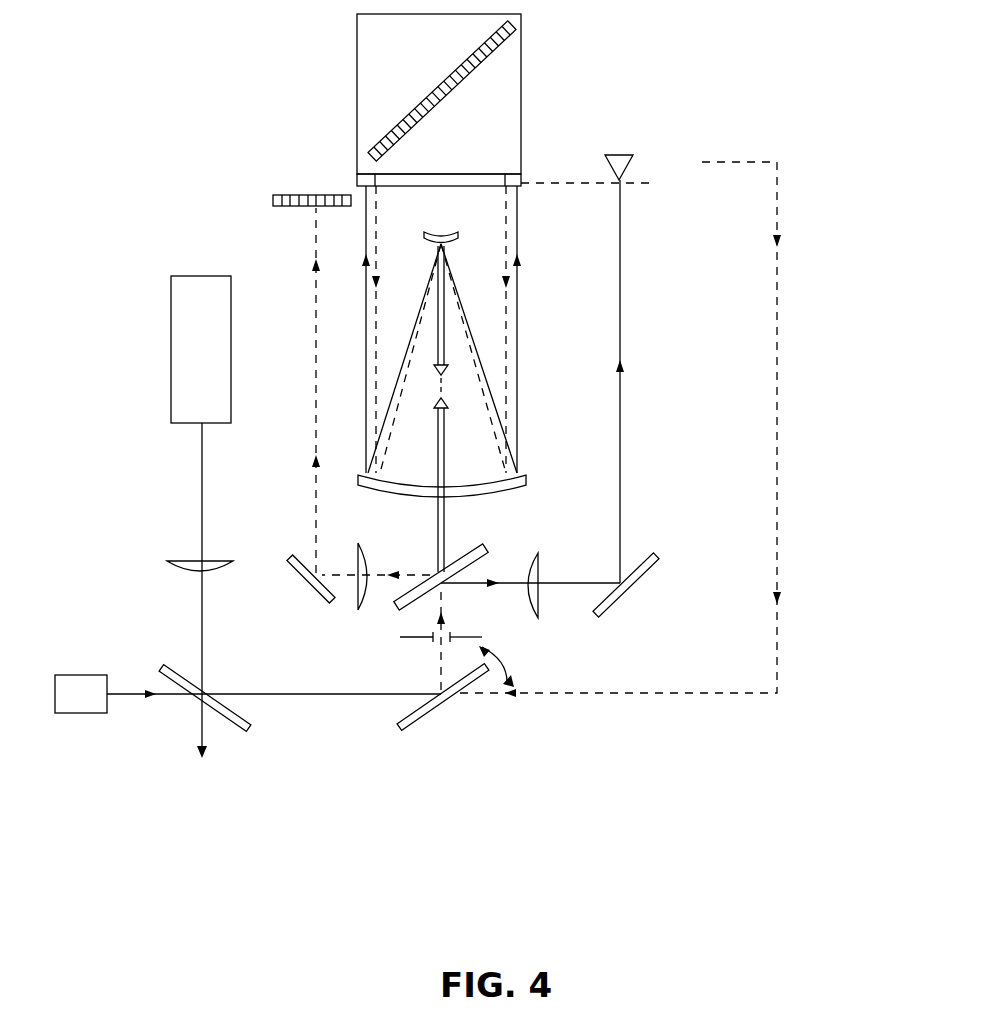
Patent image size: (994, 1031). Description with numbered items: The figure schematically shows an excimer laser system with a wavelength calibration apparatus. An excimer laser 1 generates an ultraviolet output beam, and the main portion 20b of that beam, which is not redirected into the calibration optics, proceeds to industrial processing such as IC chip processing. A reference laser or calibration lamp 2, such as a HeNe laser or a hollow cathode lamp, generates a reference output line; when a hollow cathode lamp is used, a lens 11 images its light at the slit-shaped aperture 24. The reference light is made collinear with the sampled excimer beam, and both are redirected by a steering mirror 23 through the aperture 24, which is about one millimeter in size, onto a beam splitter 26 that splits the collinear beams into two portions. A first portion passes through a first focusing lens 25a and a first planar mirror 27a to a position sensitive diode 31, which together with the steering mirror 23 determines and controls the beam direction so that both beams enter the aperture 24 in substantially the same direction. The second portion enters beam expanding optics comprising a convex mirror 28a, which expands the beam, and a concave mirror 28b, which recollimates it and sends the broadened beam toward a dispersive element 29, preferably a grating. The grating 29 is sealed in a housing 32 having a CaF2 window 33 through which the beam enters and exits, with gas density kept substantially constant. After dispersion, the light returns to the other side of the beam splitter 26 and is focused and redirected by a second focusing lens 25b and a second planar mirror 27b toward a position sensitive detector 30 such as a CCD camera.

The excimer laser 1 is at (75, 705).
The reference laser or calibration lamp 2 is at (195, 356).
The lens 11 is at (180, 560).
The main portion of the output beam 20b is at (203, 655).
The steering mirror 23 is at (438, 718).
The aperture 24 is at (410, 640).
The first focusing lens 25a is at (537, 623).
The second focusing lens 25b is at (357, 618).
The beam splitter 26 is at (465, 548).
The first planar mirror 27a is at (652, 578).
The second planar mirror 27b is at (297, 558).
The convex mirror 28a is at (443, 231).
The concave mirror 28b is at (530, 478).
The dispersive element 29 is at (450, 92).
The detector 30 is at (293, 193).
The position sensitive diode 31 is at (640, 178).
The housing 32 is at (522, 70).
The window 33 is at (522, 184).